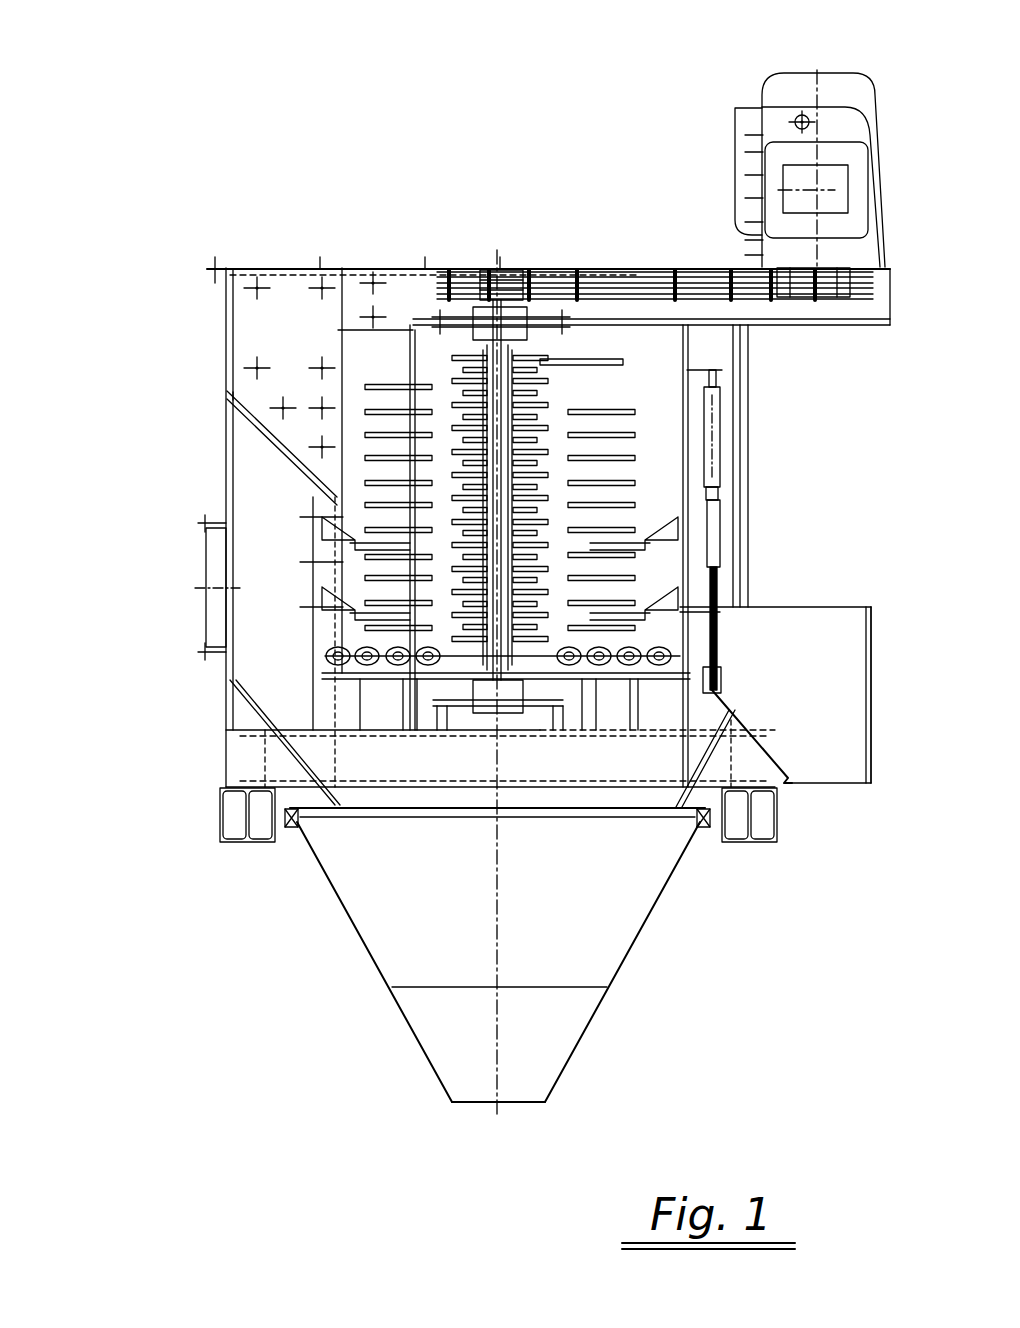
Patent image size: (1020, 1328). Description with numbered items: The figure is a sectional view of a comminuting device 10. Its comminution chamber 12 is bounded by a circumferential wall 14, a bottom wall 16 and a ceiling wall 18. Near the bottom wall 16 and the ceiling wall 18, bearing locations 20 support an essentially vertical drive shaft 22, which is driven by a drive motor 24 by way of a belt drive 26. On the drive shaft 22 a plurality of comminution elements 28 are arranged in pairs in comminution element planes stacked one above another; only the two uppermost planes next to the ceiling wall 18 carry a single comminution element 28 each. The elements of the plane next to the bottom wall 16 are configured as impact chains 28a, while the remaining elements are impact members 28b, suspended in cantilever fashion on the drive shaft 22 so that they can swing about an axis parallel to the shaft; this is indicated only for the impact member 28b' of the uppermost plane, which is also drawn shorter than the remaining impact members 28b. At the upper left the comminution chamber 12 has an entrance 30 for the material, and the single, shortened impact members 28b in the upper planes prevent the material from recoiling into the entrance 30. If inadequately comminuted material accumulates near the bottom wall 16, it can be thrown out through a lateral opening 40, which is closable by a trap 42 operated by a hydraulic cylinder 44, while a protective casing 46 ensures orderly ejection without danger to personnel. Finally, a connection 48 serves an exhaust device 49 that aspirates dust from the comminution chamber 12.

The comminuting device 10 is at (200, 113).
The comminution chamber 12 is at (373, 343).
The circumferential wall 14 is at (313, 498).
The bottom wall 16 is at (620, 675).
The ceiling wall 18 is at (600, 358).
The bearing locations 20 is at (507, 300).
The drive shaft 22 is at (480, 350).
The drive motor 24 is at (800, 90).
The belt drive 26 is at (748, 275).
The comminution elements 28 is at (372, 412).
The impact chains 28a is at (330, 665).
The impact members 28b is at (391, 603).
The uppermost impact member 28b' is at (611, 292).
The entrance 30 is at (300, 298).
The lateral opening 40 is at (720, 640).
The trap 42 is at (698, 640).
The hydraulic cylinder 44 is at (717, 443).
The protective casing 46 is at (875, 620).
The connection 48 is at (203, 575).
The exhaust device 49 is at (155, 613).